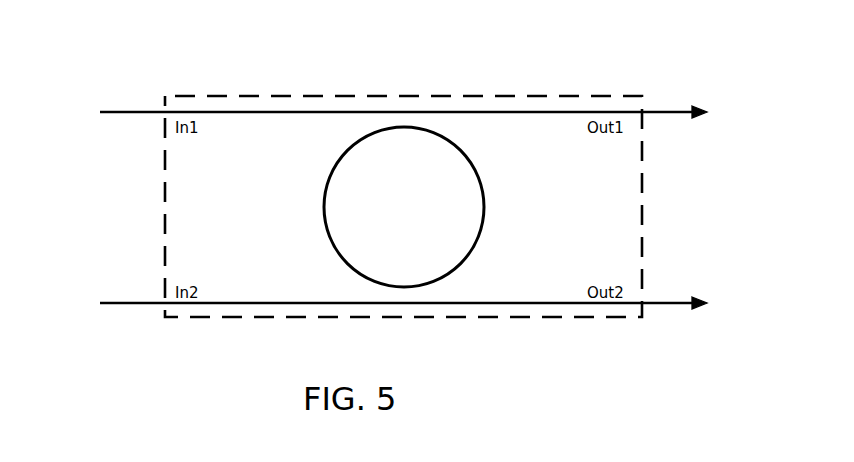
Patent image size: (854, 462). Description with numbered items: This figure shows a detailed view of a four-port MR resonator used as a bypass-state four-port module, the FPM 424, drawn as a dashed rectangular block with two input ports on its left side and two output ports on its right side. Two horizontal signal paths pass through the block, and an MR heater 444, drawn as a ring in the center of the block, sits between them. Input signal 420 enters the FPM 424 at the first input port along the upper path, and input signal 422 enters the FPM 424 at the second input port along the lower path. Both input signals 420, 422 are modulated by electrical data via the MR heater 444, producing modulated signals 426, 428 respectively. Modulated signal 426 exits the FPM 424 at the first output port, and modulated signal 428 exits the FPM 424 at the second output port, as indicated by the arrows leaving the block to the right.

The FPM 424 is at (196, 96).
The input signal 420 is at (341, 113).
The input signal 422 is at (341, 304).
The modulated signal 426 is at (703, 113).
The modulated signal 428 is at (703, 304).
The MR heater 444 is at (404, 207).